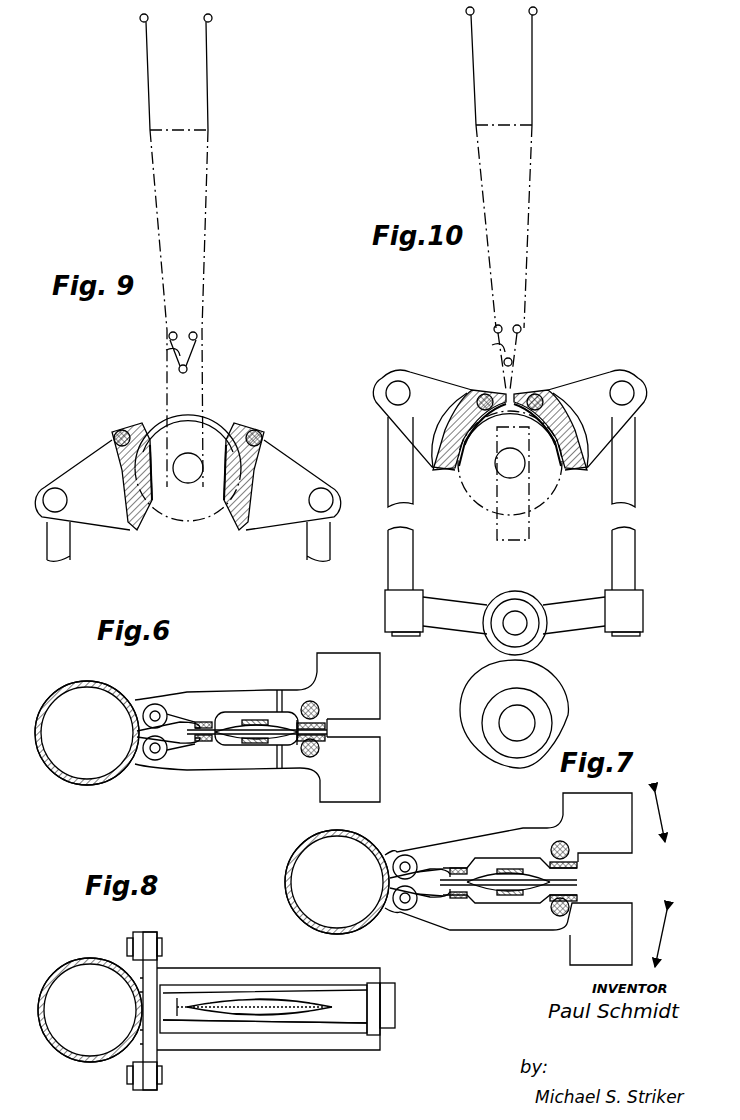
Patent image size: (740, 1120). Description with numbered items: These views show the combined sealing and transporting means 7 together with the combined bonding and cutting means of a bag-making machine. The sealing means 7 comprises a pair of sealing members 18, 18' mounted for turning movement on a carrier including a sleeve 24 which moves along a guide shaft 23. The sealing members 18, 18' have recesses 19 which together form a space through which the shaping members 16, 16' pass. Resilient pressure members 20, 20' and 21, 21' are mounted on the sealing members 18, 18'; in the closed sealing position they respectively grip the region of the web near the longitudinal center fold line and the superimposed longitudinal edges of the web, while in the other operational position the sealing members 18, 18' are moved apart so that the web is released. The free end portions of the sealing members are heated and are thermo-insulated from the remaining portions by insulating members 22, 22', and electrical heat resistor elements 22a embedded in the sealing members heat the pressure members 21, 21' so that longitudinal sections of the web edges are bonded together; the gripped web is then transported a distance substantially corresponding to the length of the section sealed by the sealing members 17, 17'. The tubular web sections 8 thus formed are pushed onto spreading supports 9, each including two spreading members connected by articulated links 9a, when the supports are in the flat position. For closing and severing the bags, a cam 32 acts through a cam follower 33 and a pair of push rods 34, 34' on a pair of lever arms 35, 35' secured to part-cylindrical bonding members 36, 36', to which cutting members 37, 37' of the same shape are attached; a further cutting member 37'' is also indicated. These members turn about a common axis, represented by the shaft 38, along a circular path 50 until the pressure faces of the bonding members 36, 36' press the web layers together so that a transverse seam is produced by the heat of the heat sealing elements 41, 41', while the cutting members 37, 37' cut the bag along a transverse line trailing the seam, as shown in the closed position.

In FIG. 6, the combined sealing and transporting means 7 is at (367, 667).
In FIG. 7, the combined sealing and transporting means 7 is at (617, 803).
In FIG. 10, the tubular web section 8 is at (529, 541).
In FIG. 6, the tubular web section 8 is at (266, 742).
In FIG. 7, the tubular web section 8 is at (512, 887).
In FIG. 8, the tubular web section 8 is at (310, 1012).
In FIG. 9, the spreading support 9 is at (208, 110).
In FIG. 10, the spreading support 9 is at (470, 97).
In FIG. 9, the articulated link 9a is at (170, 362).
In FIG. 10, the articulated link 9a is at (497, 331).
In FIG. 6, the shaping member 16 is at (256, 765).
In FIG. 7, the shaping member 16 is at (508, 919).
In FIG. 8, the shaping member 16 is at (259, 1042).
In FIG. 6, the shaping member 16' is at (256, 697).
In FIG. 7, the shaping member 16' is at (508, 840).
In FIG. 8, the shaping member 16' is at (259, 974).
In FIG. 6, the sealing member 17 is at (147, 765).
In FIG. 7, the sealing member 17 is at (401, 914).
In FIG. 6, the sealing member 17' is at (148, 700).
In FIG. 7, the sealing member 17' is at (401, 850).
In FIG. 6, the sealing member 18 is at (257, 769).
In FIG. 7, the sealing member 18 is at (508, 929).
In FIG. 6, the sealing member 18' is at (257, 687).
In FIG. 7, the sealing member 18' is at (508, 832).
In FIG. 6, the recess 19 is at (292, 712).
In FIG. 7, the recess 19 is at (536, 858).
In FIG. 6, the resilient pressure member 20 is at (171, 767).
In FIG. 7, the resilient pressure member 20 is at (429, 922).
In FIG. 6, the resilient pressure member 20' is at (181, 696).
In FIG. 7, the resilient pressure member 20' is at (431, 846).
In FIG. 6, the resilient pressure member 21 is at (330, 758).
In FIG. 7, the resilient pressure member 21 is at (577, 920).
In FIG. 6, the resilient pressure member 21' is at (333, 704).
In FIG. 7, the resilient pressure member 21' is at (583, 840).
In FIG. 6, the insulating member 22 is at (260, 766).
In FIG. 7, the insulating member 22 is at (513, 929).
In FIG. 6, the insulating member 22' is at (260, 698).
In FIG. 7, the insulating member 22' is at (513, 840).
In FIG. 6, the electrical heat resistor element 22a is at (312, 703).
In FIG. 6, the guide shaft 23 is at (98, 743).
In FIG. 7, the guide shaft 23 is at (348, 892).
In FIG. 8, the guide shaft 23 is at (101, 1020).
In FIG. 6, the sleeve 24 is at (74, 693).
In FIG. 7, the sleeve 24 is at (290, 866).
In FIG. 8, the sleeve 24 is at (76, 964).
In FIG. 10, the cam 32 is at (553, 717).
In FIG. 10, the cam follower 33 is at (520, 592).
In FIG. 9, the push rod 34 is at (72, 541).
In FIG. 10, the push rod 34 is at (417, 503).
In FIG. 9, the push rod 34' is at (299, 541).
In FIG. 10, the push rod 34' is at (605, 503).
In FIG. 9, the lever arm 35 is at (82, 485).
In FIG. 10, the lever arm 35 is at (422, 408).
In FIG. 9, the lever arm 35' is at (295, 485).
In FIG. 10, the lever arm 35' is at (597, 402).
In FIG. 9, the bonding member 36 is at (112, 476).
In FIG. 10, the bonding member 36 is at (469, 409).
In FIG. 9, the bonding member 36' is at (262, 476).
In FIG. 10, the bonding member 36' is at (550, 407).
In FIG. 9, the cutting member 37 is at (152, 472).
In FIG. 10, the cutting member 37 is at (482, 444).
In FIG. 8, the cutting member 37 is at (265, 1051).
In FIG. 10, the cutting member 37' is at (537, 435).
In FIG. 8, the cutting member 37' is at (261, 1011).
In FIG. 9, the right jaw lining 37'' is at (220, 471).
In FIG. 9, the shaft 38 is at (198, 478).
In FIG. 10, the shaft 38 is at (520, 473).
In FIG. 10, the heat sealing element 41 is at (466, 391).
In FIG. 10, the heat sealing element 41' is at (553, 389).
In FIG. 9, the circular path 50 is at (185, 521).
In FIG. 10, the circular path 50 is at (478, 496).